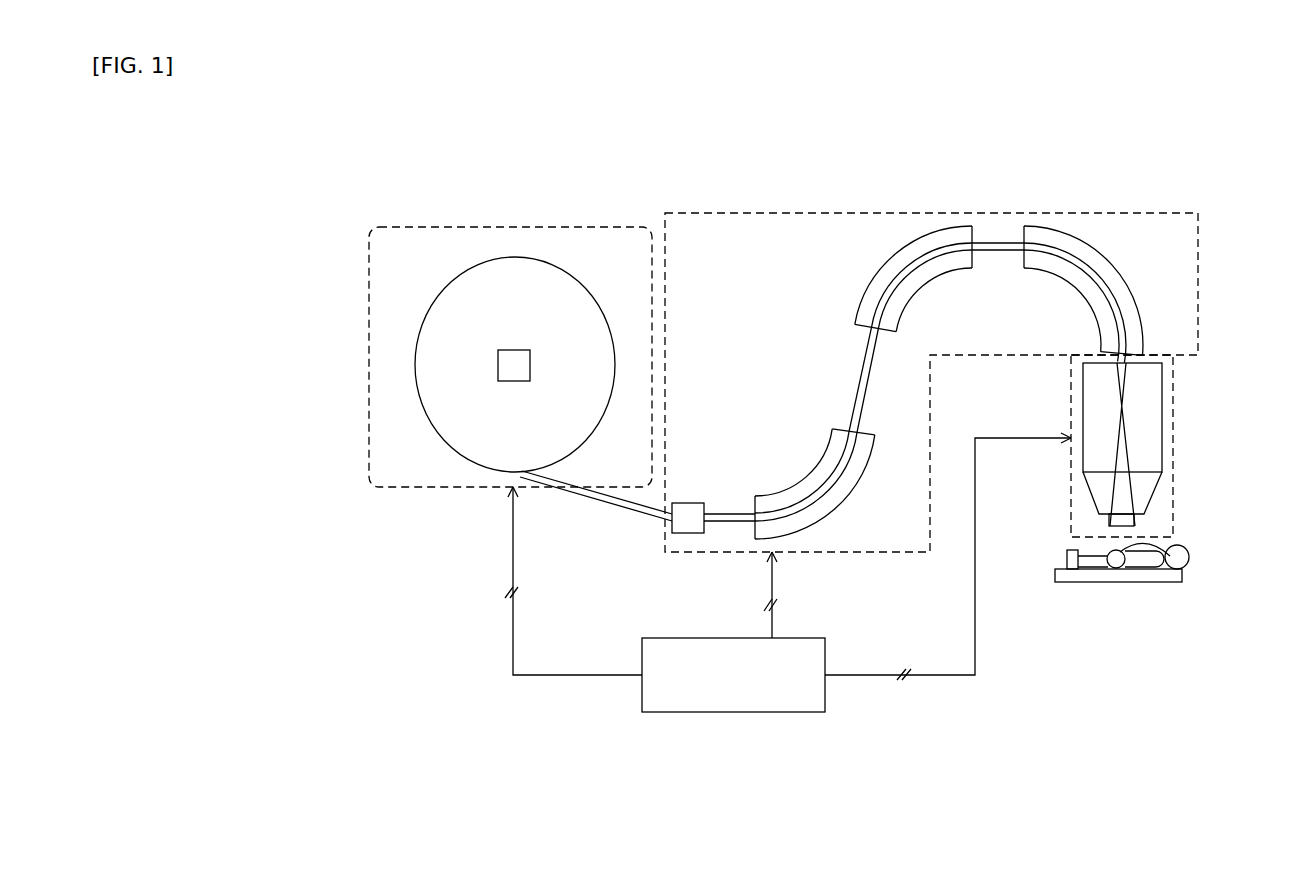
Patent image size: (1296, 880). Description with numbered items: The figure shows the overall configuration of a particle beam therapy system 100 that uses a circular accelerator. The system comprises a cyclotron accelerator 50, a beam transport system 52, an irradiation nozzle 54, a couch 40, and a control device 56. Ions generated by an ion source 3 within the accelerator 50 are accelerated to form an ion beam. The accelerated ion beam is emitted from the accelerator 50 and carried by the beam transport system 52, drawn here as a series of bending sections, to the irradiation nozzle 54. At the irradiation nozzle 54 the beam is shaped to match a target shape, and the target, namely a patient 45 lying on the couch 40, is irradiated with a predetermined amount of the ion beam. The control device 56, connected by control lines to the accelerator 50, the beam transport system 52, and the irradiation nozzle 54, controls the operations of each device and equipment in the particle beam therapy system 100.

The particle beam therapy system 100 is at (1087, 142).
The ion source 3 is at (515, 350).
The cyclotron accelerator 50 is at (412, 483).
The beam transport system 52 is at (1198, 263).
The irradiation nozzle 54 is at (1173, 427).
The couch 40 is at (1162, 582).
The patient 45 is at (1065, 562).
The control device 56 is at (642, 653).